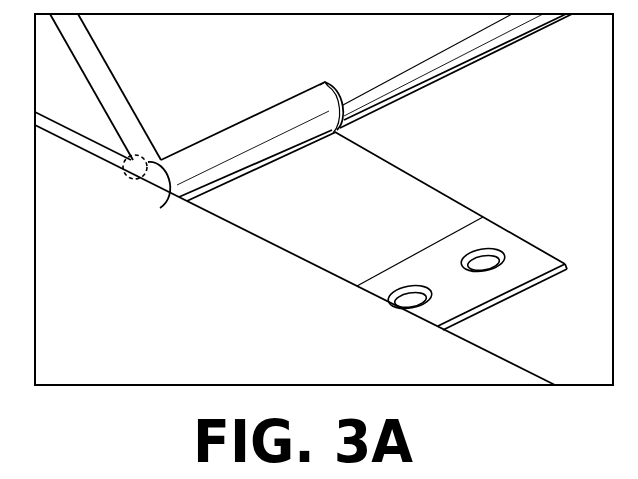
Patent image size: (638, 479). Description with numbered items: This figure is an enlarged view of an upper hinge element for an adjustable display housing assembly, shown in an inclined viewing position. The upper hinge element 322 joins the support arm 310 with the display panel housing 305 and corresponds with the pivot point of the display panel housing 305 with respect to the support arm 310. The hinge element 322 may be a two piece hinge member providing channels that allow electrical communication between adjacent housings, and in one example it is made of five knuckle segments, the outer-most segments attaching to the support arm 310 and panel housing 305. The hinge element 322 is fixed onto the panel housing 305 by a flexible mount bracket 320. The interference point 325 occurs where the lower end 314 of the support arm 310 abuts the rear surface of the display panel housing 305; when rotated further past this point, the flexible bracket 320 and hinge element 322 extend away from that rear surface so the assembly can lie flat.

The display panel housing 305 is at (68, 140).
The support arm 310 is at (123, 120).
The lower end of the support arm 314 is at (143, 147).
The flexible mount bracket 320 is at (420, 203).
The upper hinge element 322 is at (165, 186).
The interference point 325 is at (133, 178).